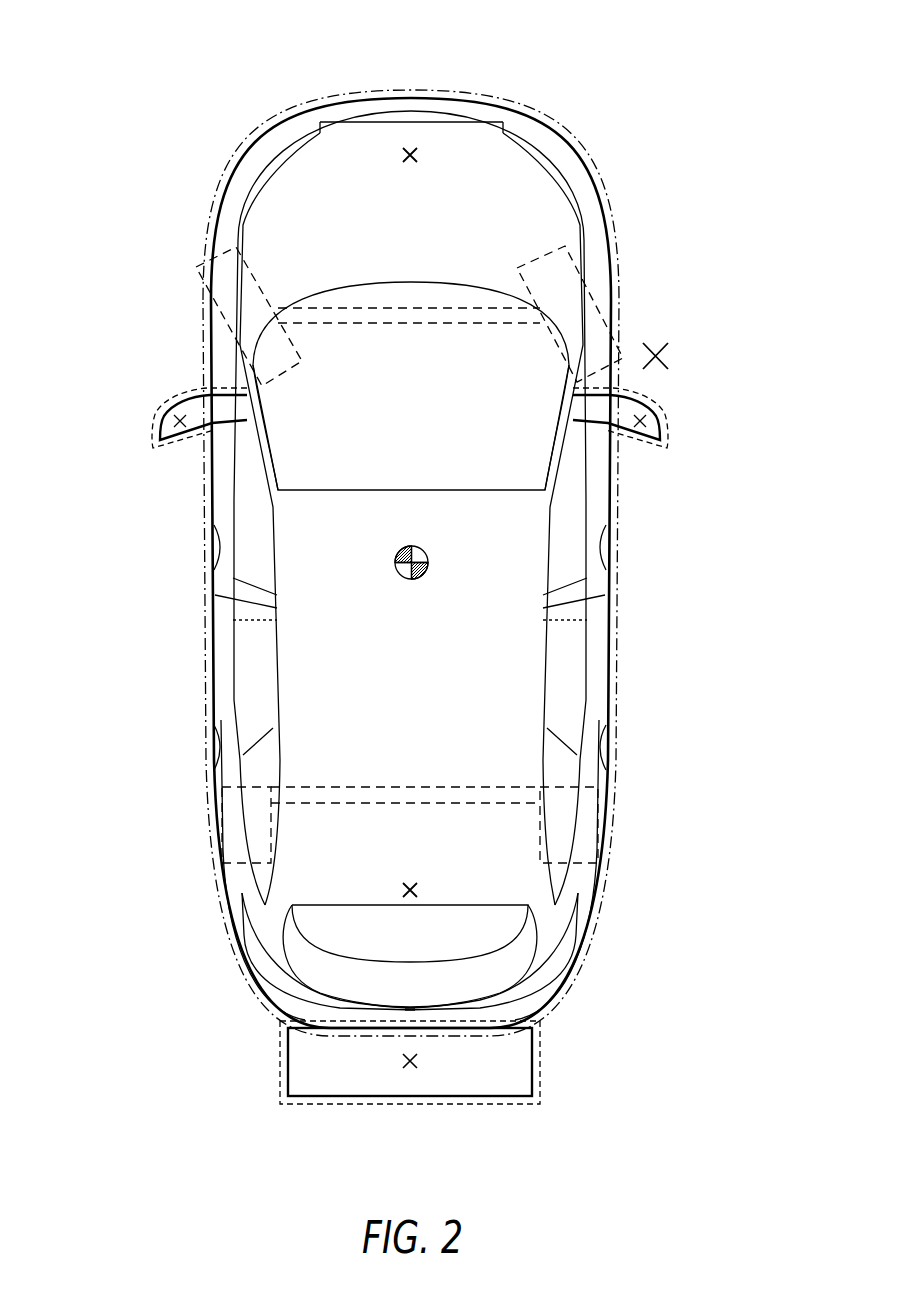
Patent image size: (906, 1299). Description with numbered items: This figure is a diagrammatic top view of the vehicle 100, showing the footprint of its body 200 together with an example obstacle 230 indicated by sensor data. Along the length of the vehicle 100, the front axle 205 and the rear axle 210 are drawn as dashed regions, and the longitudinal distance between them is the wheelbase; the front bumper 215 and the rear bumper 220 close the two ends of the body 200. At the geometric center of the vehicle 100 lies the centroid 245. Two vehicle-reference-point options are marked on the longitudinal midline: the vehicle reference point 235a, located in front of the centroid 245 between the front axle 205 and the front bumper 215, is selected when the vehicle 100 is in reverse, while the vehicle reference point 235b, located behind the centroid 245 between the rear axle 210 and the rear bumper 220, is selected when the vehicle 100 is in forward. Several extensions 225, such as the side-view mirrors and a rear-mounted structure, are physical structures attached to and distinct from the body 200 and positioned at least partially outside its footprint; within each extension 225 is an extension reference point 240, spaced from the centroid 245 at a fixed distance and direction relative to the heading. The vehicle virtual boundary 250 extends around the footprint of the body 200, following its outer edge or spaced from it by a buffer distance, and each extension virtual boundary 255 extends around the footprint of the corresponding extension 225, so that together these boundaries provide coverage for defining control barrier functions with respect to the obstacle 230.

The vehicle 100 is at (128, 85).
The body 200 is at (552, 915).
The front axle 205 is at (397, 323).
The rear axle 210 is at (400, 787).
The front bumper 215 is at (432, 97).
The rear bumper 220 is at (553, 1010).
The extension 225 is at (156, 444).
The obstacle 230 is at (660, 348).
The vehicle reference point 235a is at (412, 164).
The vehicle reference point 235b is at (412, 882).
The extension reference point 240 is at (172, 421).
The centroid 245 is at (414, 580).
The vehicle virtual boundary 250 is at (614, 623).
The extension virtual boundary 255 is at (166, 398).